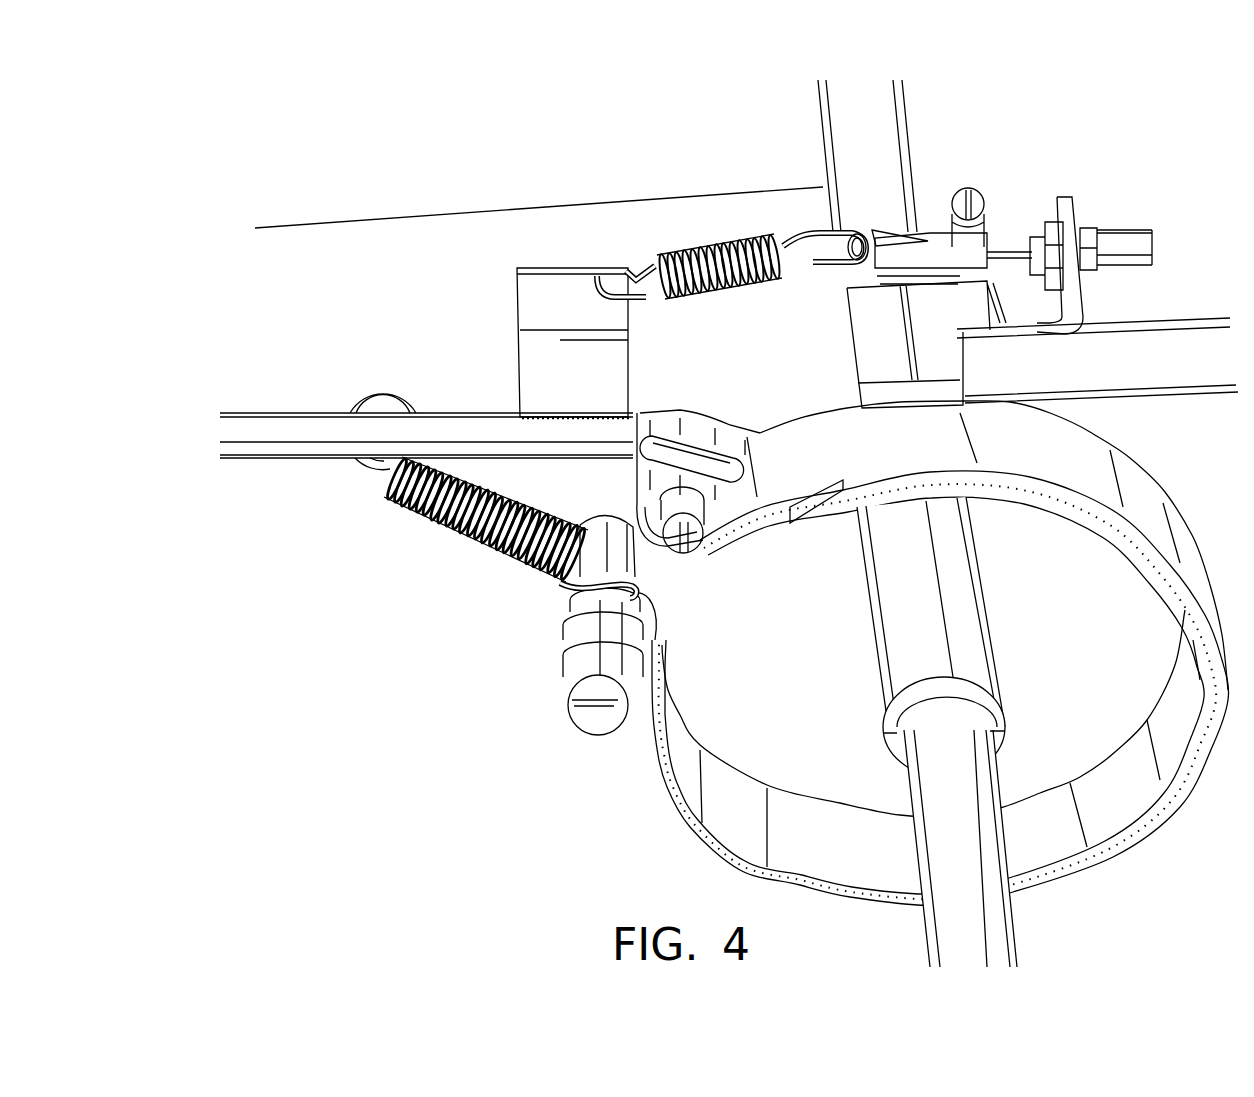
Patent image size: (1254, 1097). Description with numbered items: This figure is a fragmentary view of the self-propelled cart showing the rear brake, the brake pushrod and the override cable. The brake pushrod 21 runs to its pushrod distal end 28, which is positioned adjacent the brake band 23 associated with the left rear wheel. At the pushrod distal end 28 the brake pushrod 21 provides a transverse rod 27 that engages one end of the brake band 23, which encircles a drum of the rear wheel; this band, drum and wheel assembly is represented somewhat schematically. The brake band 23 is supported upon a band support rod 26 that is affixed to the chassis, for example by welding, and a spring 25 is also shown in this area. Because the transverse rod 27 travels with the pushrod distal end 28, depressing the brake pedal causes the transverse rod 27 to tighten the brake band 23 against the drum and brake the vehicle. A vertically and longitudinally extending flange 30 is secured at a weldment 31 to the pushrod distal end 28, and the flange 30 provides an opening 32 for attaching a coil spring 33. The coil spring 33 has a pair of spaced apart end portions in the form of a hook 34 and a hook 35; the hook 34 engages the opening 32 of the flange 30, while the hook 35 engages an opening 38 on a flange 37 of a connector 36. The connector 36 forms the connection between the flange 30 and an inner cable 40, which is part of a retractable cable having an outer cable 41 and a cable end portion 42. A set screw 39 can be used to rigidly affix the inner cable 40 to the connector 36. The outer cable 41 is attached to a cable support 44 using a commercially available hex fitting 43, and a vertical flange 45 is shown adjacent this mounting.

The brake pushrod 21 is at (289, 432).
The brake band 23 is at (1040, 461).
The spring 25 is at (470, 545).
The band support rod 26 is at (586, 708).
The transverse rod 27 is at (690, 537).
The pushrod distal end 28 is at (642, 412).
The flange 30 is at (520, 290).
The weldment 31 is at (563, 417).
The opening 32 is at (598, 282).
The coil spring 33 is at (748, 236).
The hook 34 is at (644, 300).
The hook 35 is at (814, 244).
The connector 36 is at (940, 232).
The flange 37 is at (882, 232).
The opening 38 is at (857, 234).
The set screw 39 is at (982, 200).
The inner cable 40 is at (1006, 252).
The outer cable 41 is at (1140, 231).
The cable end portion 42 is at (1090, 265).
The hex fitting 43 is at (1053, 263).
The cable support 44 is at (872, 310).
The vertical flange 45 is at (1077, 212).